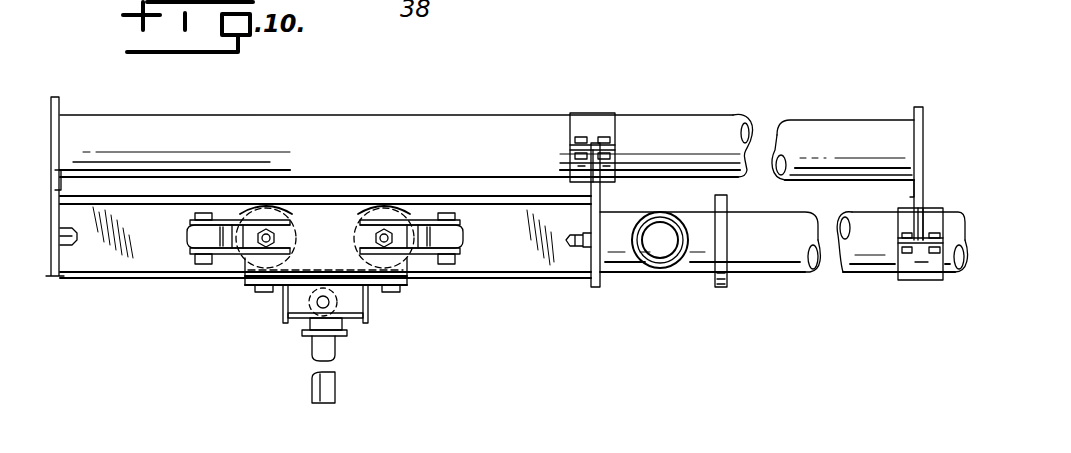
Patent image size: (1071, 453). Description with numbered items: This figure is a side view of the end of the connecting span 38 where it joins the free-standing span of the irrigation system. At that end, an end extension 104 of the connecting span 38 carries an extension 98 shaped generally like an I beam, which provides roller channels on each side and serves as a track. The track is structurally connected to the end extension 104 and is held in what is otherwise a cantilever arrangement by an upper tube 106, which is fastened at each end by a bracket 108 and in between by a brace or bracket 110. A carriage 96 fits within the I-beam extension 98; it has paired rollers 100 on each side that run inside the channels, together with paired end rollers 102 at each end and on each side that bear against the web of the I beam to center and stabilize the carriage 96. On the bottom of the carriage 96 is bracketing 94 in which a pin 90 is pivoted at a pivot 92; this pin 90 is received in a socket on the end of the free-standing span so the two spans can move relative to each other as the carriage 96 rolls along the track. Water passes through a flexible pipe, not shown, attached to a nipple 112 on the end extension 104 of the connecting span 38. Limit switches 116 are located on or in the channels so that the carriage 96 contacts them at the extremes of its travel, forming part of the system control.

The connecting span 38 is at (850, 260).
The pin 90 is at (326, 376).
The pivot 92 is at (313, 310).
The bracketing 94 is at (370, 303).
The carriage 96 is at (244, 292).
The extension 98 is at (507, 279).
The paired rollers 100 is at (378, 212).
The paired end rollers 102 is at (190, 238).
The end extension 104 is at (622, 263).
The upper tube 106 is at (271, 96).
The bracket 108 is at (50, 98).
The brace or bracket 110 is at (597, 143).
The nipple 112 is at (661, 268).
The limit switches 116 is at (67, 247).